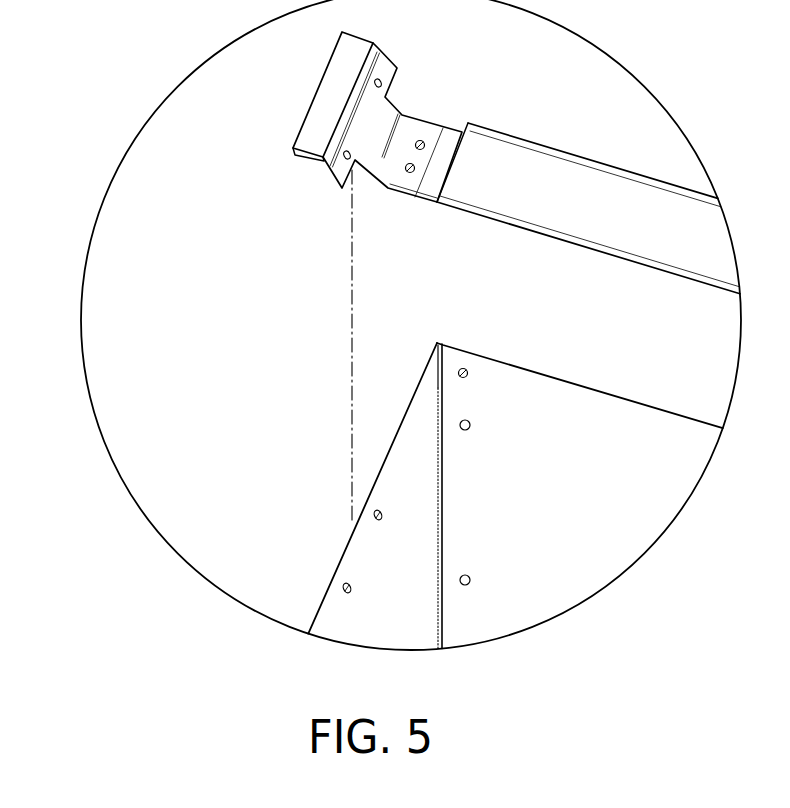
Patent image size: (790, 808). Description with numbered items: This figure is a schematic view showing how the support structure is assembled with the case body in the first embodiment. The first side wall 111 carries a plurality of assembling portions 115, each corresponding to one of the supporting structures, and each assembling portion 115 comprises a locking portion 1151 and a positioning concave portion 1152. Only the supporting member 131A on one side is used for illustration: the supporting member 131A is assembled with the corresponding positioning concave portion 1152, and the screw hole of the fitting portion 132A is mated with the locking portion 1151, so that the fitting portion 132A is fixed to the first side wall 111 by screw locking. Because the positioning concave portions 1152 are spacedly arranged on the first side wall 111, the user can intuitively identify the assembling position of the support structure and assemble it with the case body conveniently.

The supporting member 131A is at (322, 113).
The fitting portion 132A is at (365, 148).
The first side wall 111 is at (383, 610).
The assembling portion 115 is at (77, 534).
The locking portion 1151 is at (340, 583).
The positioning concave portion 1152 is at (348, 550).